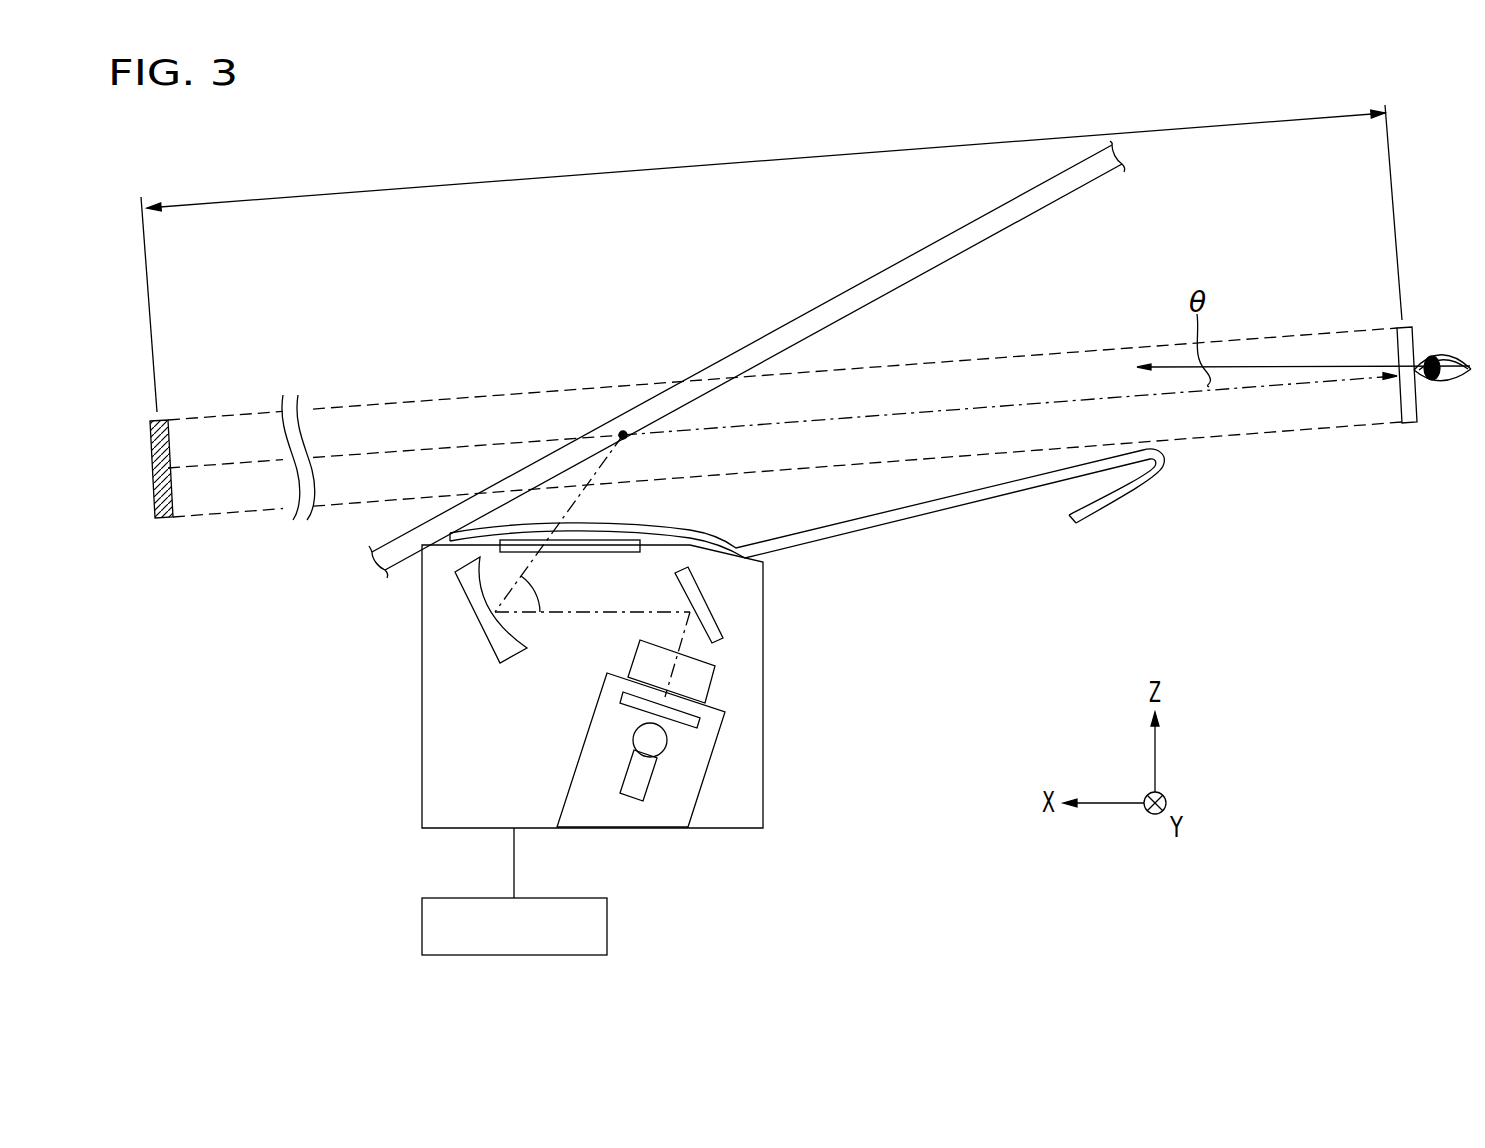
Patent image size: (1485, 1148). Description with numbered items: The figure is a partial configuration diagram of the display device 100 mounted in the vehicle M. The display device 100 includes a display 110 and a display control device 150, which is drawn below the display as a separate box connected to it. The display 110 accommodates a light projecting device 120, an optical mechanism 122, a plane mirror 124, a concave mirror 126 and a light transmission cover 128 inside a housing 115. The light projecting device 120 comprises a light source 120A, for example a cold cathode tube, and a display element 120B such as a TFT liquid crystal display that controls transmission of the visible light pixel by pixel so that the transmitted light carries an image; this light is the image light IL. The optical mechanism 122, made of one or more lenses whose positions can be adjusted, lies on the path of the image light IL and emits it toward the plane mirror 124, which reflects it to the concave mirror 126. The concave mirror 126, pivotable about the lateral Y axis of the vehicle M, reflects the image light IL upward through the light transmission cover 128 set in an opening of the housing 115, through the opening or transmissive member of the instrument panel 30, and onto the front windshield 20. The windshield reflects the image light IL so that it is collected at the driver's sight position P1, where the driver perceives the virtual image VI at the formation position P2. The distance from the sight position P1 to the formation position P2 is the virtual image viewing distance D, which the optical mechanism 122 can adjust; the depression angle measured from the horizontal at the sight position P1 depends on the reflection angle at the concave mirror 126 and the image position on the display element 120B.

The front windshield 20 is at (923, 250).
The instrument panel 30 is at (963, 504).
The display device 100 is at (345, 840).
The display 110 is at (607, 671).
The housing 115 is at (426, 622).
The light projecting device 120 is at (683, 773).
The light source 120A is at (648, 792).
The display element 120B is at (720, 722).
The optical mechanism 122 is at (715, 672).
The plane mirror 124 is at (718, 628).
The concave mirror 126 is at (485, 633).
The light transmission cover 128 is at (598, 553).
The display control device 150 is at (540, 898).
The virtual image VI is at (150, 449).
The driver's sight position P1 is at (1449, 337).
The formation position P2 is at (170, 529).
The image light IL is at (988, 405).
The virtual image viewing distance D is at (637, 169).
The vehicle M is at (240, 146).